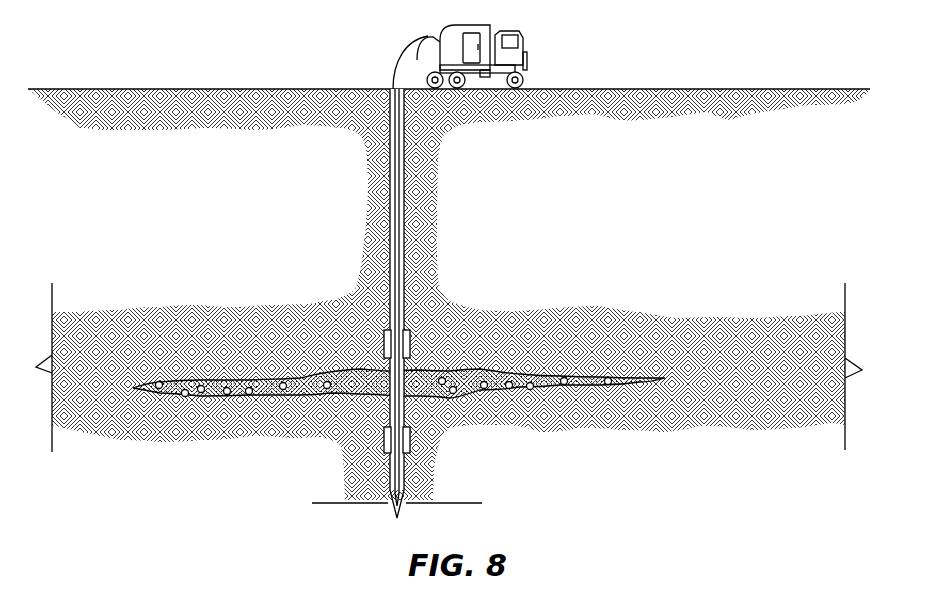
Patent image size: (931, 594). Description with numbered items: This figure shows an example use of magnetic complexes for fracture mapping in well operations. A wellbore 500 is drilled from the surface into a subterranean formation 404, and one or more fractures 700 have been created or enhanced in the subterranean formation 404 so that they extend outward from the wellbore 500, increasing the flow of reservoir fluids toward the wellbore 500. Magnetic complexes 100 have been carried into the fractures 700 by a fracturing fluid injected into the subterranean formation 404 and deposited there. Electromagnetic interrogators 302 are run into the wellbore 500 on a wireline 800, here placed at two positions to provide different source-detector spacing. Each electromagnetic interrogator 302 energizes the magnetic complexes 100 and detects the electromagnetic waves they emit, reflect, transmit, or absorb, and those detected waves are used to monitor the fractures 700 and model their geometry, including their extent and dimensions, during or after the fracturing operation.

The wireline 800 is at (395, 78).
The subterranean formation 404 is at (372, 167).
The wellbore 500 is at (391, 190).
The fracture 700 is at (317, 370).
The electromagnetic interrogator 302 is at (412, 343).
The magnetic complex 100 is at (201, 393).